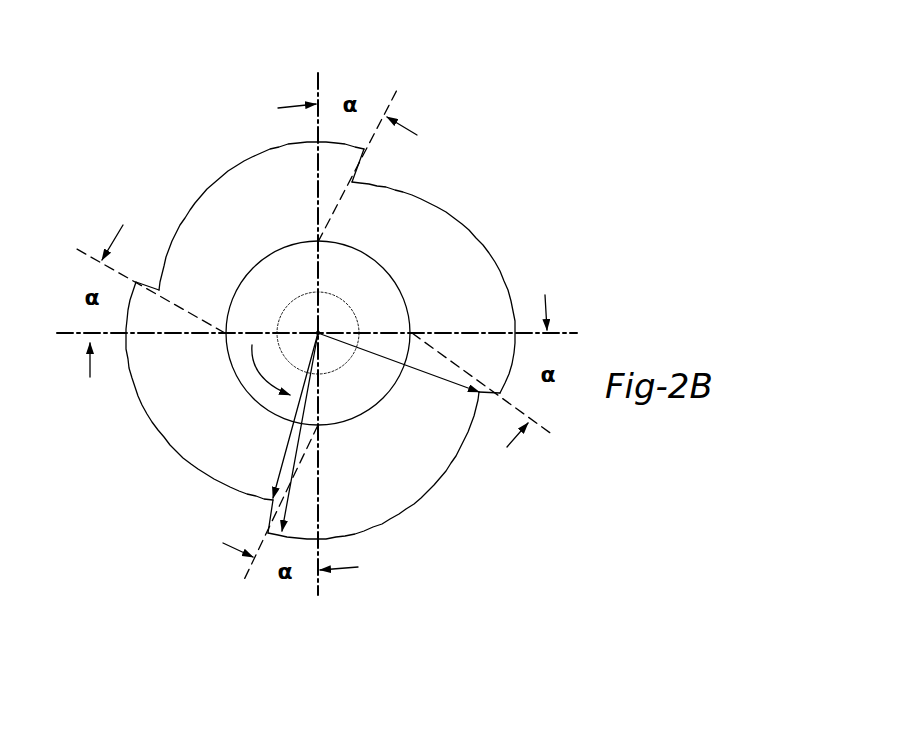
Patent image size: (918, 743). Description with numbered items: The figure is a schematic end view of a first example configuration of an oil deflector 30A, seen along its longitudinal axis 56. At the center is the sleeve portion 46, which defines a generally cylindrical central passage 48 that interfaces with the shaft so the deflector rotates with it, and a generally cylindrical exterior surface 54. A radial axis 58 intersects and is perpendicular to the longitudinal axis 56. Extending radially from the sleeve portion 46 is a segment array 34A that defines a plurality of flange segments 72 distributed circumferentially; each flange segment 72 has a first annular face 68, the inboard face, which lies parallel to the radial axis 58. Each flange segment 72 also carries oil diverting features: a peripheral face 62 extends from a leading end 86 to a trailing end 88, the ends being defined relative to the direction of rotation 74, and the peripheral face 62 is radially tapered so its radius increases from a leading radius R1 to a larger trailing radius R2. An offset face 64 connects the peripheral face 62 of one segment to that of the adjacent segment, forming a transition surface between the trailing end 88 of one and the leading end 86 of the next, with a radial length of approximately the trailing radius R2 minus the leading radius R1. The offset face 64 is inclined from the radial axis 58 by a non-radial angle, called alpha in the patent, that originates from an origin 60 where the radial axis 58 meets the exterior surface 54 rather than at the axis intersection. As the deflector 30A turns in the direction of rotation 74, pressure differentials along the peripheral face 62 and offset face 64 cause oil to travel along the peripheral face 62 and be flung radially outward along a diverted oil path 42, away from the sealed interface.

The oil deflector 30A is at (592, 148).
The segment array 34A is at (192, 123).
The diverted oil path 42 is at (273, 123).
The sleeve portion 46 is at (228, 365).
The central passage 48 is at (343, 297).
The exterior surface 54 is at (380, 262).
The longitudinal axis 56 is at (313, 330).
The radial axis 58 is at (325, 78).
The origin 60 is at (318, 240).
The peripheral face 62 is at (223, 175).
The offset face 64 is at (364, 166).
The first annular face 68 is at (412, 214).
The flange segment 72 is at (170, 207).
The direction of rotation 74 is at (262, 367).
The leading end 86 is at (485, 398).
The trailing end 88 is at (498, 388).
The leading radius R1 is at (287, 442).
The trailing radius R2 is at (310, 403).